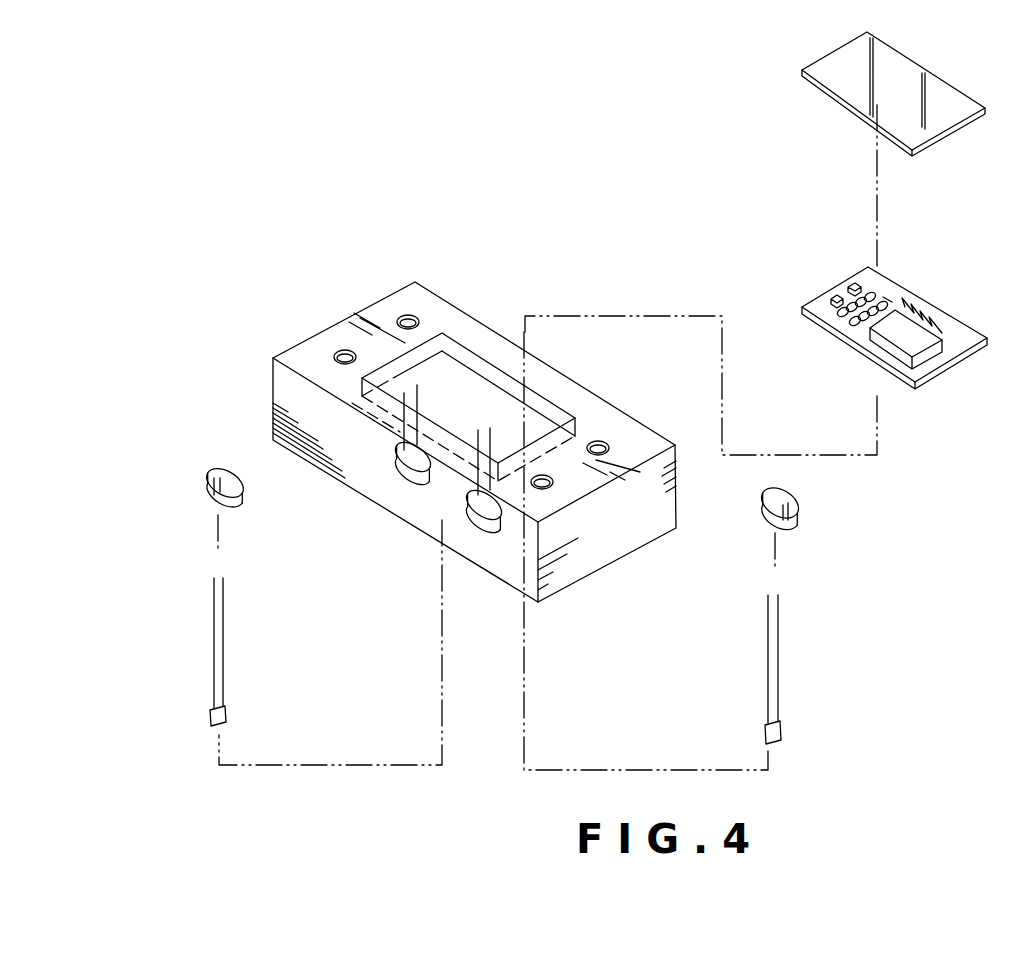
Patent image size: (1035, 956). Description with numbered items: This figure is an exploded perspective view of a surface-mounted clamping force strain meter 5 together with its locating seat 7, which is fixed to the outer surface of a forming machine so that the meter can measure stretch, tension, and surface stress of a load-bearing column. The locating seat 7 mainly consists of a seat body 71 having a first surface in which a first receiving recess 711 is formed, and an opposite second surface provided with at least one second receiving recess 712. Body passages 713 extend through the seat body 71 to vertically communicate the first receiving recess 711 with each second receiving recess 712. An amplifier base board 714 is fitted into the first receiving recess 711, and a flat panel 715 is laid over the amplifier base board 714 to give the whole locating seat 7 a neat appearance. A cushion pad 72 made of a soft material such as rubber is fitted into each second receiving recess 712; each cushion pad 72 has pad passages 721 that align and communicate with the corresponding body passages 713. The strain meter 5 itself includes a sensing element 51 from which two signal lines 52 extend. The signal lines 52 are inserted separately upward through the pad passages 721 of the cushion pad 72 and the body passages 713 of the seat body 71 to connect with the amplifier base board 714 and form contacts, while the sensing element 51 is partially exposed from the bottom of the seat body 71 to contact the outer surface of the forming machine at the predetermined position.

The locating seat 7 is at (433, 282).
The seat body 71 is at (457, 315).
The first receiving recess 711 is at (528, 423).
The second receiving recess 712 is at (487, 527).
The body passages 713 is at (490, 428).
The amplifier base board 714 is at (960, 308).
The flat panel 715 is at (960, 83).
The cushion pad 72 is at (808, 602).
The pad passages 721 is at (792, 503).
The clamping force strain meter 5 is at (235, 607).
The sensing element 51 is at (230, 708).
The signal lines 52 is at (228, 623).